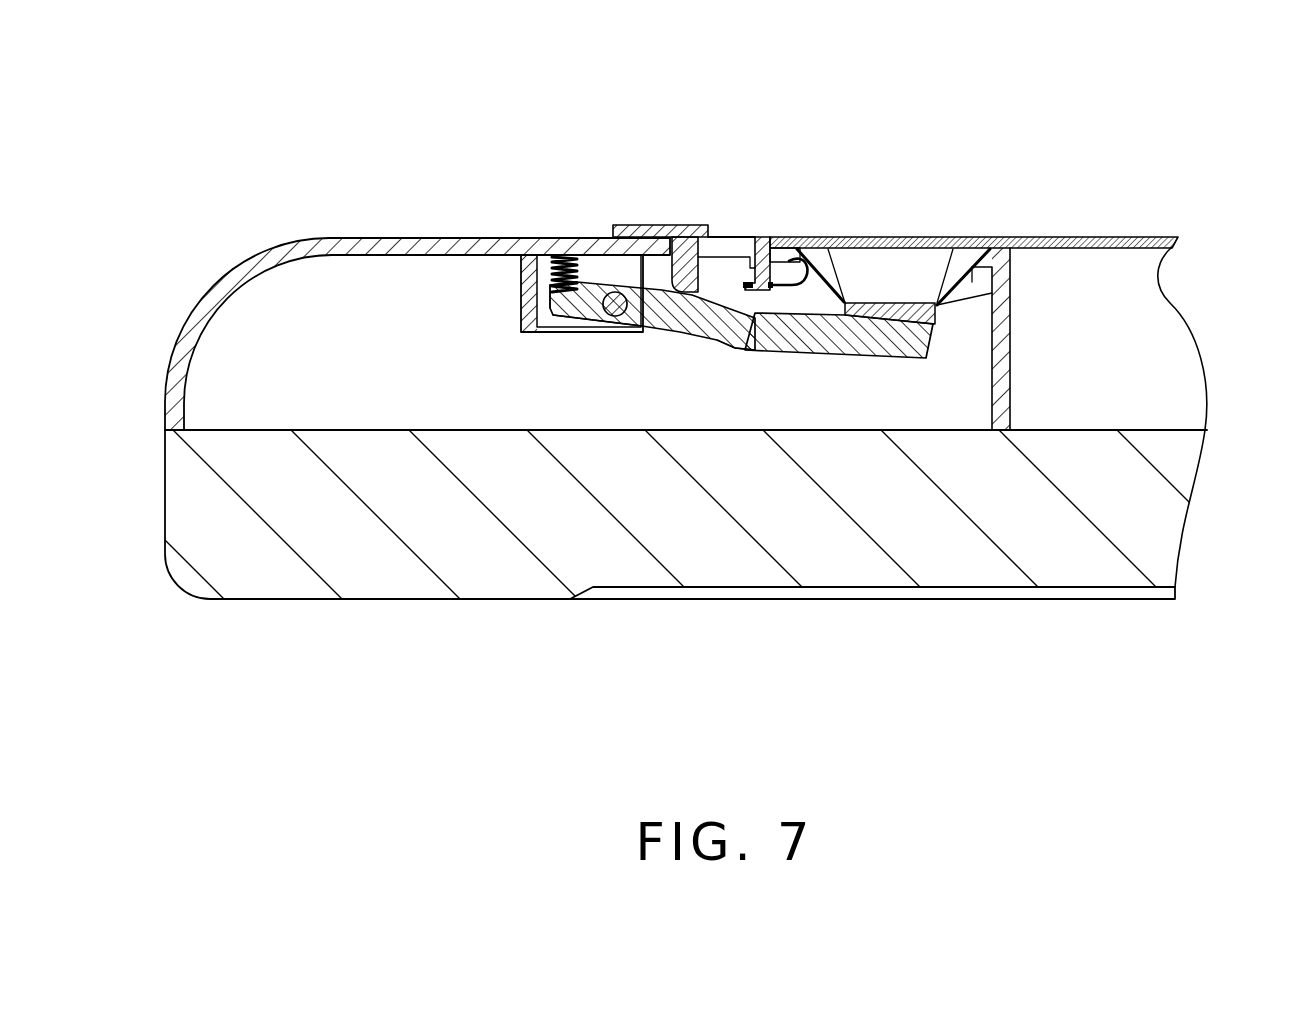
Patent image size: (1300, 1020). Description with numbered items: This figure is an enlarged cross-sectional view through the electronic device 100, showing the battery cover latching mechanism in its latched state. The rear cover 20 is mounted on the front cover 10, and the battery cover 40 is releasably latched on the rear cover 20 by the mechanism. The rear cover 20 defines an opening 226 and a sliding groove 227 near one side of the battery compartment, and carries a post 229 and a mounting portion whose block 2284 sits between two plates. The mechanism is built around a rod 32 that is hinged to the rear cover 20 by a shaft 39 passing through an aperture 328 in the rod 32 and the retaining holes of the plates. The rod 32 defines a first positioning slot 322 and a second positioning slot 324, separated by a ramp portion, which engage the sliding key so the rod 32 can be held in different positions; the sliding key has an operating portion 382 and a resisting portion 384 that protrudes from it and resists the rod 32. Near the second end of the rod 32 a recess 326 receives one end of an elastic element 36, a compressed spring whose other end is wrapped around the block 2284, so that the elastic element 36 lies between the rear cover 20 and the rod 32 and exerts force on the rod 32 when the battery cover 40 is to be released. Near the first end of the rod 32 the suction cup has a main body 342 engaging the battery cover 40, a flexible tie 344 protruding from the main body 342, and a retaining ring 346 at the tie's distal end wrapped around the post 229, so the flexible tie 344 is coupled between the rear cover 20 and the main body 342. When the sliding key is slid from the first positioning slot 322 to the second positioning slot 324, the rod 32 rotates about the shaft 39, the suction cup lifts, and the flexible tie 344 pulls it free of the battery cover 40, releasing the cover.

The electronic device 100 is at (1078, 92).
The front cover 10 is at (225, 532).
The rear cover 20 is at (213, 313).
The rod 32 is at (903, 347).
The elastic element 36 is at (528, 271).
The shaft 39 is at (613, 312).
The battery cover 40 is at (1100, 237).
The opening 226 is at (970, 247).
The sliding groove 227 is at (738, 243).
The post 229 is at (763, 282).
The first positioning slot 322 is at (685, 292).
The second positioning slot 324 is at (742, 325).
The recess 326 is at (577, 282).
The aperture 328 is at (642, 325).
The main body 342 is at (867, 278).
The flexible tie 344 is at (848, 352).
The retaining ring 346 is at (783, 250).
The operating portion 382 is at (660, 226).
The resisting portion 384 is at (705, 270).
The block 2284 is at (565, 265).